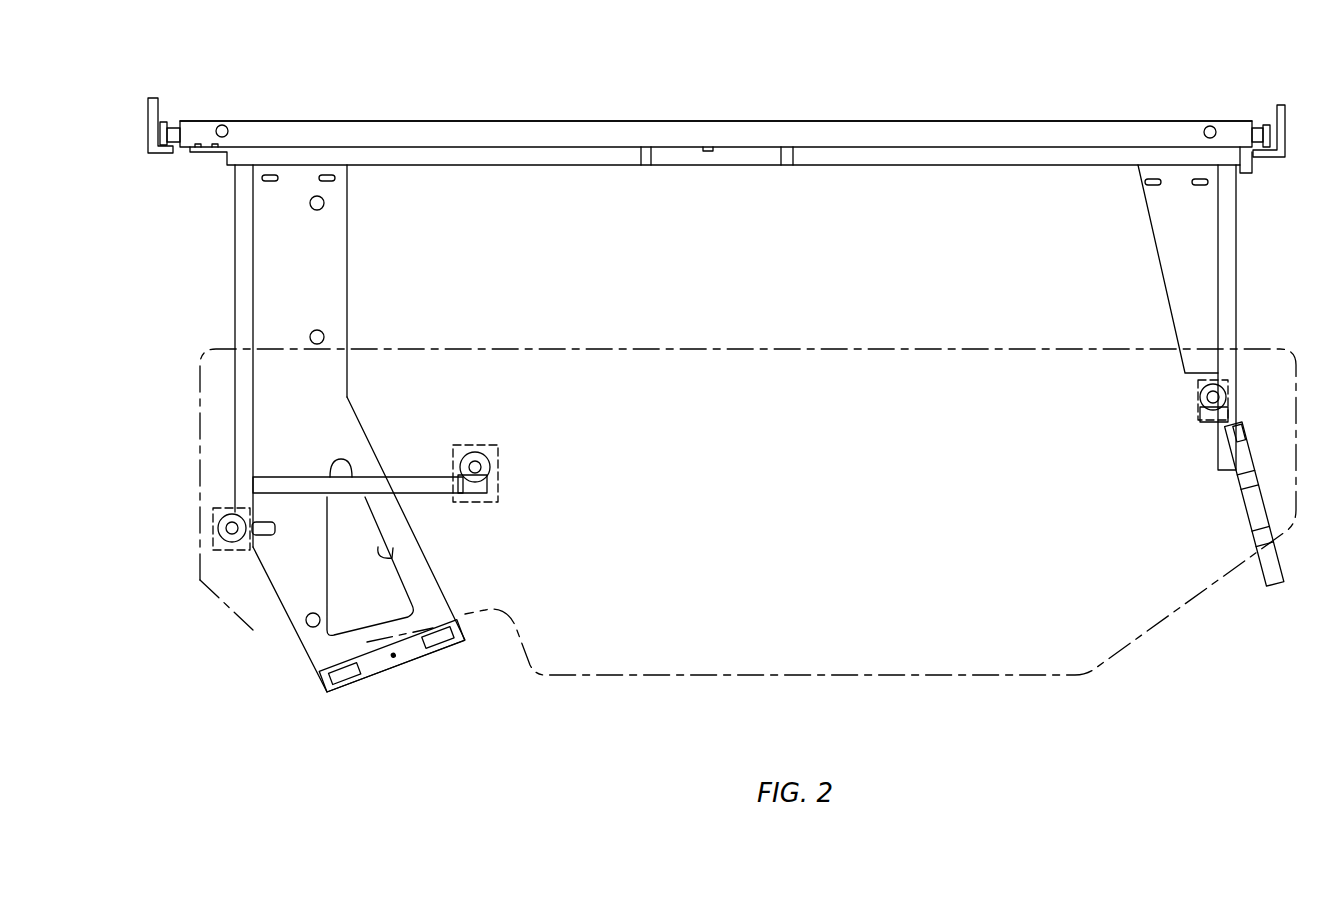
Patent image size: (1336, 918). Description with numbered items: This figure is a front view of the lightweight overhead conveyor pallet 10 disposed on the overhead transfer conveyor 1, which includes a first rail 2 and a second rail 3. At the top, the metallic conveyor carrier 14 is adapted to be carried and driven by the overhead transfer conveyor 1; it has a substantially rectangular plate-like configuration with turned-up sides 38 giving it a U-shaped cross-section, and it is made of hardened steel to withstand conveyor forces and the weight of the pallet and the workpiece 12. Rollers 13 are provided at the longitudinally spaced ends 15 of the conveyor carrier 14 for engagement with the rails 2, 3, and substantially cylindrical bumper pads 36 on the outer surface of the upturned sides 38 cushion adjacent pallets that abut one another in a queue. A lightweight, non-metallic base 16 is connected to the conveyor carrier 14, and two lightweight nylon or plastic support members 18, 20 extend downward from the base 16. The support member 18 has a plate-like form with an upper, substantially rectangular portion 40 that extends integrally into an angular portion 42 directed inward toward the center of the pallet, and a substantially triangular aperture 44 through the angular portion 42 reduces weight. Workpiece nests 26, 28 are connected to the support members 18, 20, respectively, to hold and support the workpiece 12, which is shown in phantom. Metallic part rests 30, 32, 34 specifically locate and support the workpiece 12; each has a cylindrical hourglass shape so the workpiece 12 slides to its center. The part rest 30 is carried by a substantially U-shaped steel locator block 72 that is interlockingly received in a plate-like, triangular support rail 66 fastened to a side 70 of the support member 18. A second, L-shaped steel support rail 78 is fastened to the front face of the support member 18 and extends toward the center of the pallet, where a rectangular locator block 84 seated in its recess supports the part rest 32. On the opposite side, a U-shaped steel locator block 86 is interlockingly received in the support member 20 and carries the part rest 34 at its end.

The lightweight overhead conveyor pallet 10 is at (118, 92).
The overhead transfer conveyor 1 is at (145, 121).
The first rail 2 is at (145, 142).
The second rail 3 is at (1284, 147).
The workpiece 12 is at (200, 378).
The rollers 13 is at (160, 118).
The conveyor carrier 14 is at (440, 121).
The longitudinally spaced ends 15 is at (180, 125).
The base 16 is at (913, 165).
The support member 18 is at (336, 456).
The support member 20 is at (1238, 262).
The workpiece nest 26 is at (357, 690).
The workpiece nest 28 is at (1282, 588).
The part rest 30 is at (222, 553).
The part rest 32 is at (492, 452).
The part rest 34 is at (1200, 407).
The bumper pads 36 is at (228, 125).
The turned-up sides 38 is at (725, 130).
The upper rectangular portion 40 is at (280, 293).
The angular portion 42 is at (385, 544).
The triangular aperture 44 is at (394, 556).
The support rail 66 is at (235, 228).
The side 70 is at (253, 305).
The locator block 72 is at (213, 530).
The second support rail 78 is at (405, 477).
The locator block 84 is at (478, 482).
The locator block 86 is at (1198, 392).